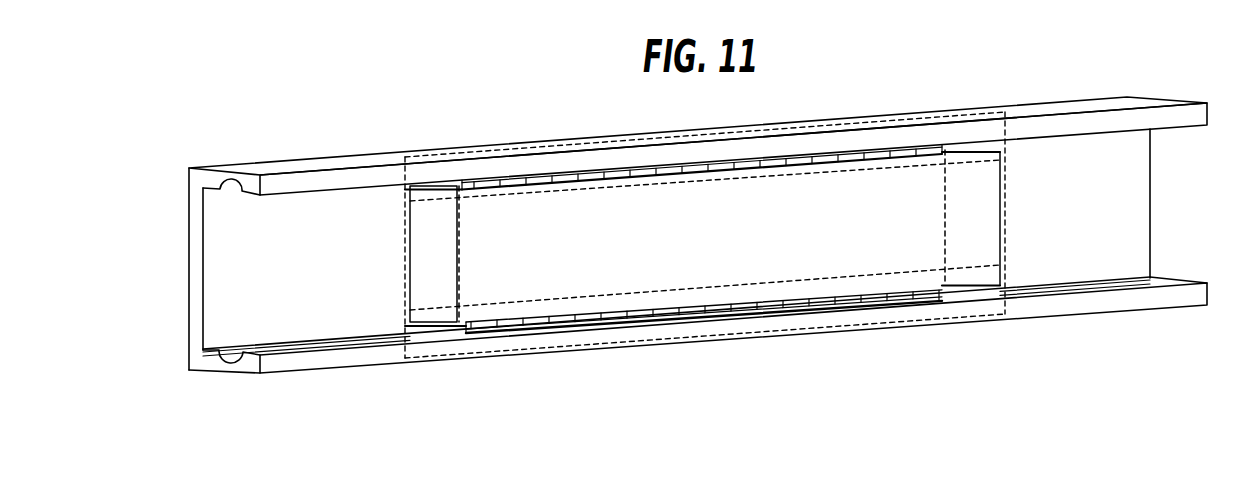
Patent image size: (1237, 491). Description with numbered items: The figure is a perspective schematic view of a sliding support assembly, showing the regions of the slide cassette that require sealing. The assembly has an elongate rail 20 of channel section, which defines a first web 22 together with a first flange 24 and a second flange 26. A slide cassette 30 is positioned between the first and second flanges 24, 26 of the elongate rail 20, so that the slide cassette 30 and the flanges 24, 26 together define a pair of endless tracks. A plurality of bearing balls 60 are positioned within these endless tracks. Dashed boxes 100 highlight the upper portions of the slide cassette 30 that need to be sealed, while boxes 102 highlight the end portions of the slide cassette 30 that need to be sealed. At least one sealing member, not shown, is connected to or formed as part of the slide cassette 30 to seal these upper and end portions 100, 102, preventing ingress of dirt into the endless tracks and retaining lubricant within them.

The elongate rail 20 is at (1162, 313).
The first web 22 is at (1140, 232).
The first flange 24 is at (1090, 303).
The second flange 26 is at (1063, 125).
The slide cassette 30 is at (692, 272).
The bearing balls 60 is at (483, 330).
The upper portions 100 is at (418, 150).
The end portions 102 is at (1006, 211).